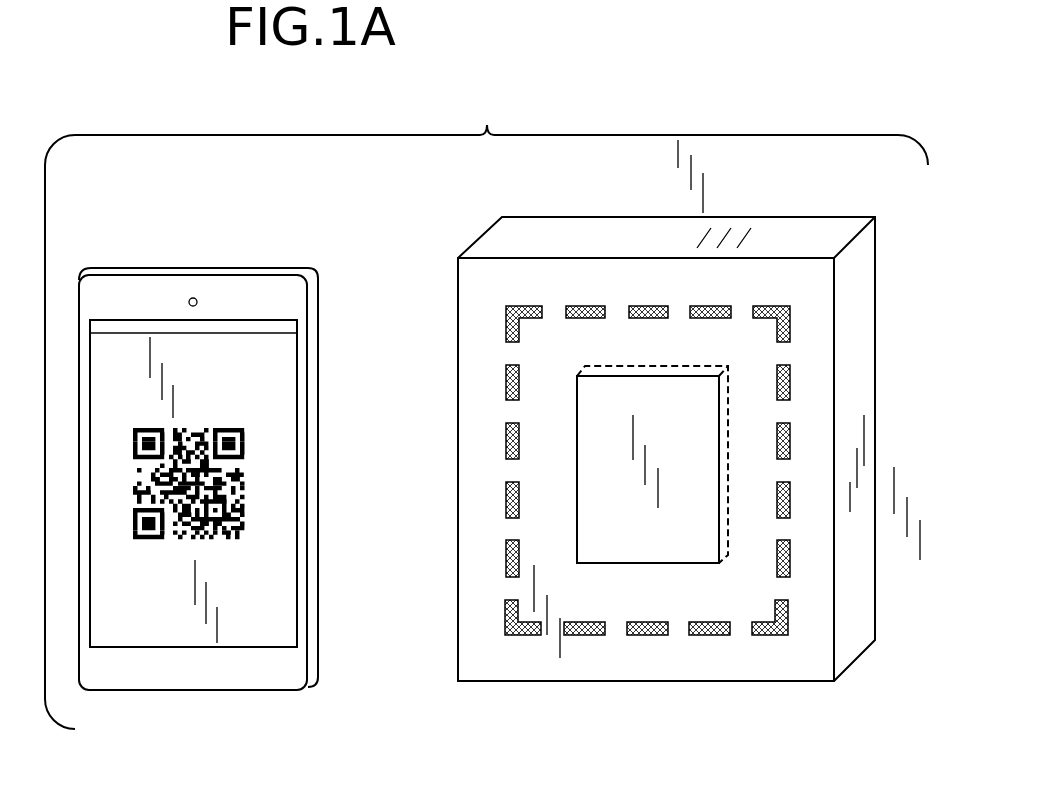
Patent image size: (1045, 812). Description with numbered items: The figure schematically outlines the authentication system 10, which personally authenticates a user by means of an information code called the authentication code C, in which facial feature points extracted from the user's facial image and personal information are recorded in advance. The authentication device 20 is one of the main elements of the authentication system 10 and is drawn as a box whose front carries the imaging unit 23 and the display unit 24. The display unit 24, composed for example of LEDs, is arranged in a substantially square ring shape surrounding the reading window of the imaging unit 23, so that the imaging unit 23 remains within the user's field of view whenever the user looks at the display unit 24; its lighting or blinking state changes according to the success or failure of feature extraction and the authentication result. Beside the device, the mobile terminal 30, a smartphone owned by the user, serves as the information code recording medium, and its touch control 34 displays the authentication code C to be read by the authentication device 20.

The authentication system 10 is at (490, 120).
The authentication device 20 is at (748, 239).
The imaging unit 23 is at (662, 376).
The display unit 24 is at (577, 306).
The mobile terminal 30 is at (278, 258).
The touch control 34 is at (270, 382).
The authentication code C is at (245, 485).